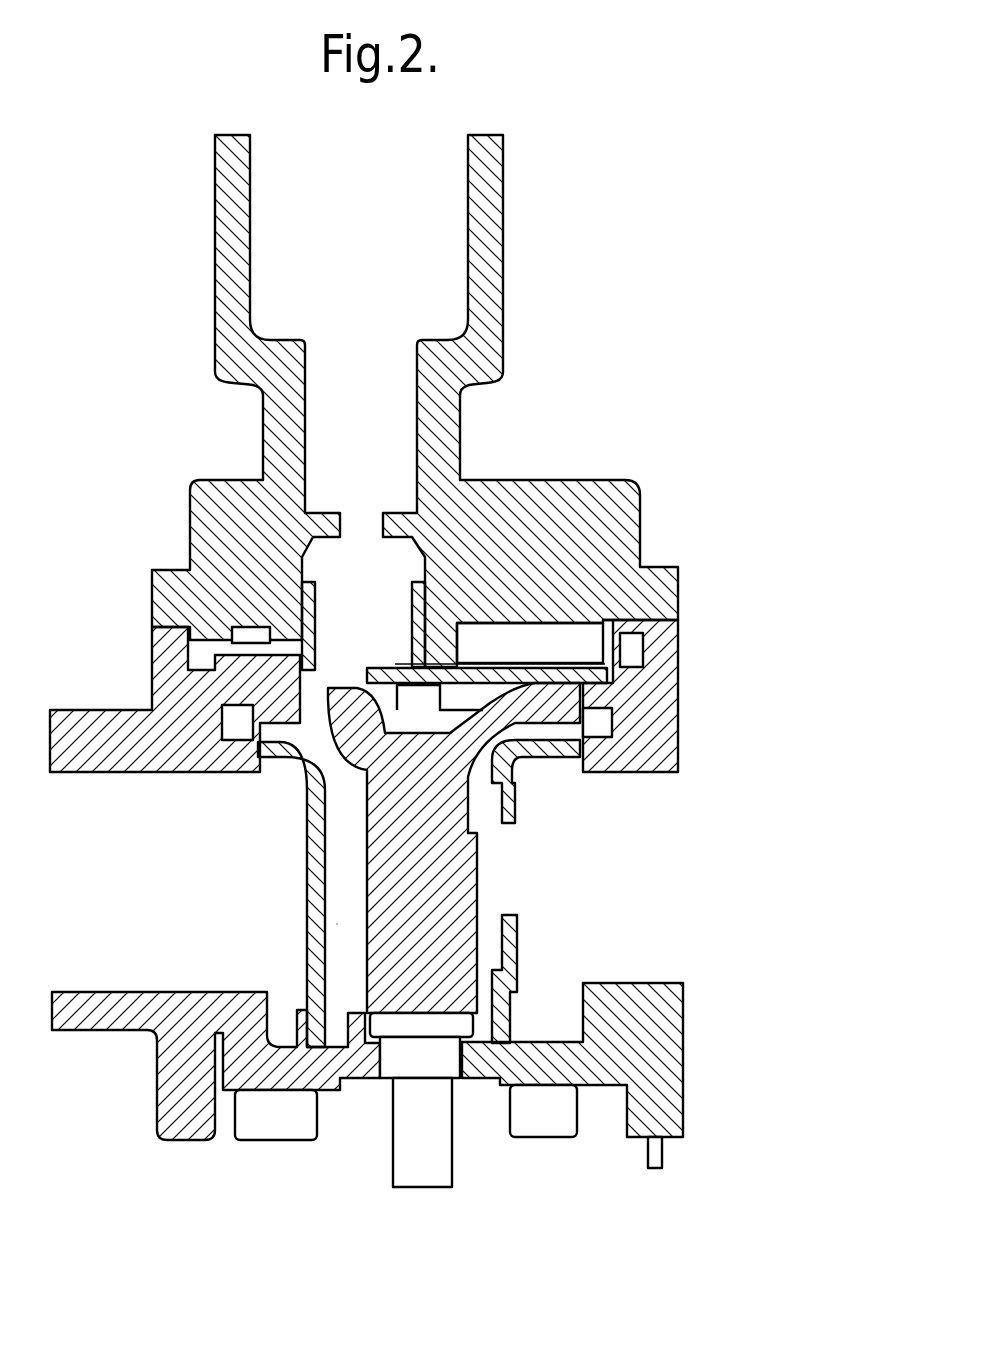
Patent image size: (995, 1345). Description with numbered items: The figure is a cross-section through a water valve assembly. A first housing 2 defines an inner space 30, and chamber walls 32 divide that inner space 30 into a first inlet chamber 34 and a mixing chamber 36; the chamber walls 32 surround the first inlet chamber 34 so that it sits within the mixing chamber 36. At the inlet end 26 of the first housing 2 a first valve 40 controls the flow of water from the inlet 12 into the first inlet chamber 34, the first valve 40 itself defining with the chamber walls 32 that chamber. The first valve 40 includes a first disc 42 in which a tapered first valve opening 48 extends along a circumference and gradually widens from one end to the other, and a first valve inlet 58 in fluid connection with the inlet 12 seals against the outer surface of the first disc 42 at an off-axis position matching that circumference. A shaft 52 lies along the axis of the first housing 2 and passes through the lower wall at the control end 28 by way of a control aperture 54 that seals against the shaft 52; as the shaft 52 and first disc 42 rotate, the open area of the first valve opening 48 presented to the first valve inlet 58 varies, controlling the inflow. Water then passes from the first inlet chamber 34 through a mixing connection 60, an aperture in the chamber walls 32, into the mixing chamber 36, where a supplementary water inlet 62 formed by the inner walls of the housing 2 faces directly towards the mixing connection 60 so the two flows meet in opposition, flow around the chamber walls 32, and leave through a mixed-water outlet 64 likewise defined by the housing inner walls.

The first housing 2 is at (663, 653).
The inlet 12 is at (300, 255).
The inlet end 26 is at (598, 306).
The control end 28 is at (577, 1219).
The inner space 30 is at (270, 828).
The chamber walls 32 is at (310, 957).
The first inlet chamber 34 is at (337, 923).
The mixing chamber 36 is at (570, 1008).
The first valve 40 is at (535, 652).
The first disc 42 is at (585, 688).
The first valve opening 48 is at (357, 665).
The shaft 52 is at (423, 1160).
The control aperture 54 is at (464, 1057).
The first valve inlet 58 is at (392, 587).
The mixing connection 60 is at (508, 865).
The supplementary water inlet 62 is at (633, 897).
The mixed-water outlet 64 is at (124, 893).